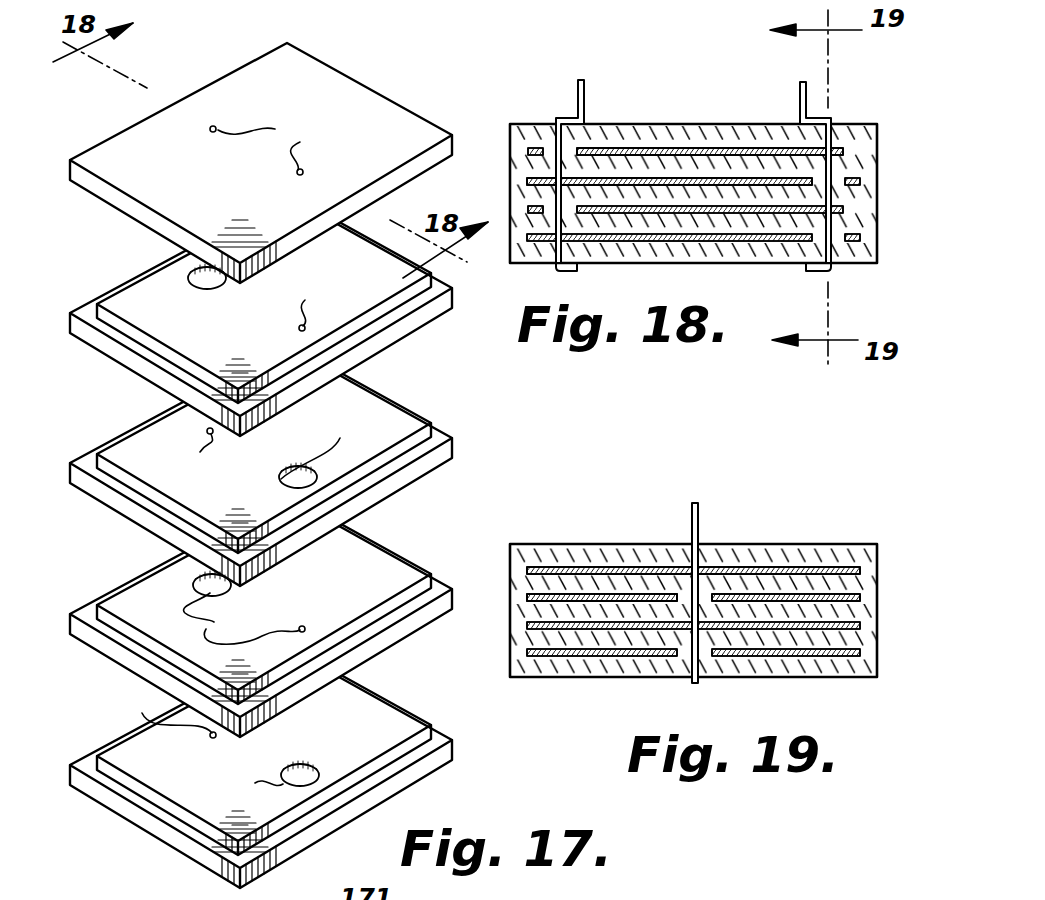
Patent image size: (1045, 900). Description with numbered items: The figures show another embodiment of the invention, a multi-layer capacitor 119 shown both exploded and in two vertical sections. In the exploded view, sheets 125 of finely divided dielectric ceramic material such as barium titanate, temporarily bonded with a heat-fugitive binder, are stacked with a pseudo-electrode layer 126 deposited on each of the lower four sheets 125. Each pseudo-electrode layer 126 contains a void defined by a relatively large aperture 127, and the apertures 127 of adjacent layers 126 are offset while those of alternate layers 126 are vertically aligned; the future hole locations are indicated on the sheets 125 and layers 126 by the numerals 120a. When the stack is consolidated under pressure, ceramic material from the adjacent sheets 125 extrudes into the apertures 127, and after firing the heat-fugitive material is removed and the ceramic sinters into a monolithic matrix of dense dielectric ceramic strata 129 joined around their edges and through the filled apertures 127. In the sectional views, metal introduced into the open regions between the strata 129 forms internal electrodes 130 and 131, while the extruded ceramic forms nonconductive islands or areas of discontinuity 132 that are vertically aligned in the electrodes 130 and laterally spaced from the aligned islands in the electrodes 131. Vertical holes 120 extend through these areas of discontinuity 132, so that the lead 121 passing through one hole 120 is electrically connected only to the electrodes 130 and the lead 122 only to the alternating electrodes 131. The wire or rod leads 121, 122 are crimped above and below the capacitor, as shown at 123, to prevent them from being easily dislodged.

In FIG. 18, the multi-layer capacitor 119 is at (718, 78).
In FIG. 19, the multi-layer capacitor 119 is at (726, 517).
In FIG. 18, the vertical holes 120 is at (560, 247).
In FIG. 19, the vertical holes 120 is at (700, 666).
In FIG. 17, the hole locations 120a is at (220, 455).
In FIG. 18, the lead 121 is at (801, 84).
In FIG. 19, the lead 121 is at (687, 512).
In FIG. 18, the lead 122 is at (582, 80).
In FIG. 18, the crimps 123 is at (563, 265).
In FIG. 17, the dielectric ceramic sheets 125 is at (118, 200).
In FIG. 17, the pseudo-electrode layer 126 is at (358, 397).
In FIG. 17, the aperture 127 is at (205, 286).
In FIG. 18, the dielectric ceramic strata 129 is at (598, 133).
In FIG. 19, the dielectric ceramic strata 129 is at (810, 577).
In FIG. 18, the electrodes 130 is at (627, 147).
In FIG. 19, the electrodes 130 is at (580, 524).
In FIG. 18, the electrodes 131 is at (697, 182).
In FIG. 19, the electrodes 131 is at (583, 576).
In FIG. 18, the areas of discontinuity 132 is at (547, 145).
In FIG. 19, the areas of discontinuity 132 is at (707, 665).